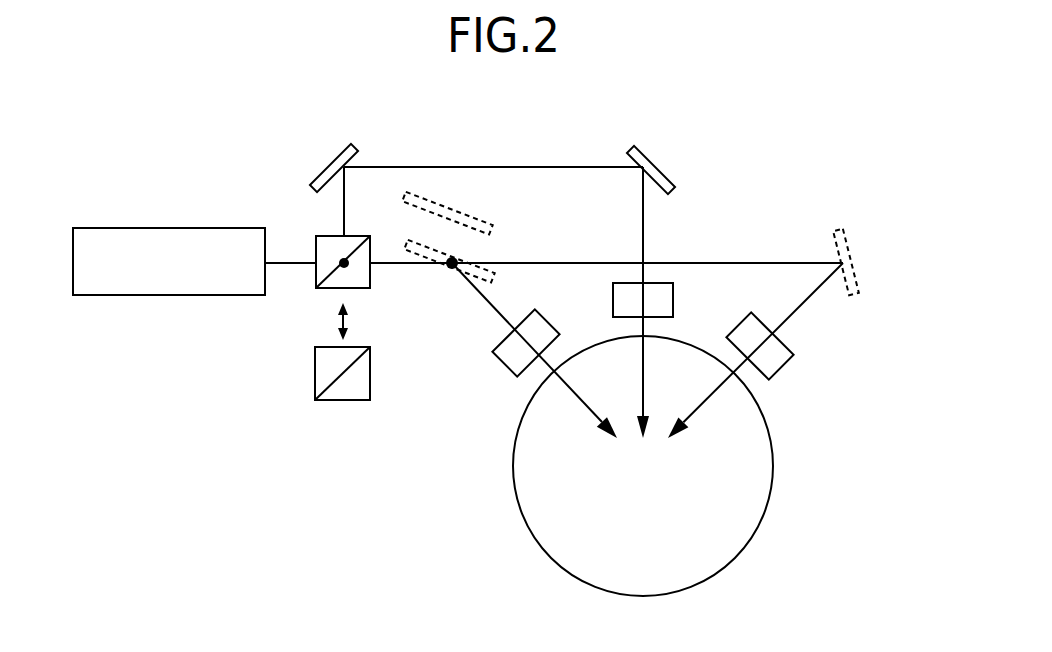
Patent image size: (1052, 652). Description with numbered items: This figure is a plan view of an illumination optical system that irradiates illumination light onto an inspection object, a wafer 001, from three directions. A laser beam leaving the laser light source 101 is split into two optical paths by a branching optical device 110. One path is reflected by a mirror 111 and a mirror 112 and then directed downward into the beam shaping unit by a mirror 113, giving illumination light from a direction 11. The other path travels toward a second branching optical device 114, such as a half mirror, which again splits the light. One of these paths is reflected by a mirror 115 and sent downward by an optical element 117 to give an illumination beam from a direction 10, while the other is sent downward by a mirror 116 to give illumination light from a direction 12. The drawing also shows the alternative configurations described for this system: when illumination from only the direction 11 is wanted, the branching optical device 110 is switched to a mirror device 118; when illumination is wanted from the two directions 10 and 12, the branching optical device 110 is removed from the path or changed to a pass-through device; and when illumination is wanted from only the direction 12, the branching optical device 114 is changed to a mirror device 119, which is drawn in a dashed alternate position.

The laser light source 101 is at (127, 228).
The branching optical device 110 is at (323, 236).
The mirror 111 is at (338, 156).
The mirror 112 is at (678, 143).
The mirror 113 is at (673, 300).
The branching optical device 114 is at (405, 238).
The mirror 115 is at (850, 245).
The mirror 116 is at (503, 367).
The optical element (lens) 117 is at (790, 347).
The mirror device 118 is at (342, 400).
The mirror device 119 is at (475, 215).
The direction 11 is at (643, 232).
The direction 12 is at (488, 308).
The direction 10 is at (742, 365).
The wafer 001 is at (713, 575).